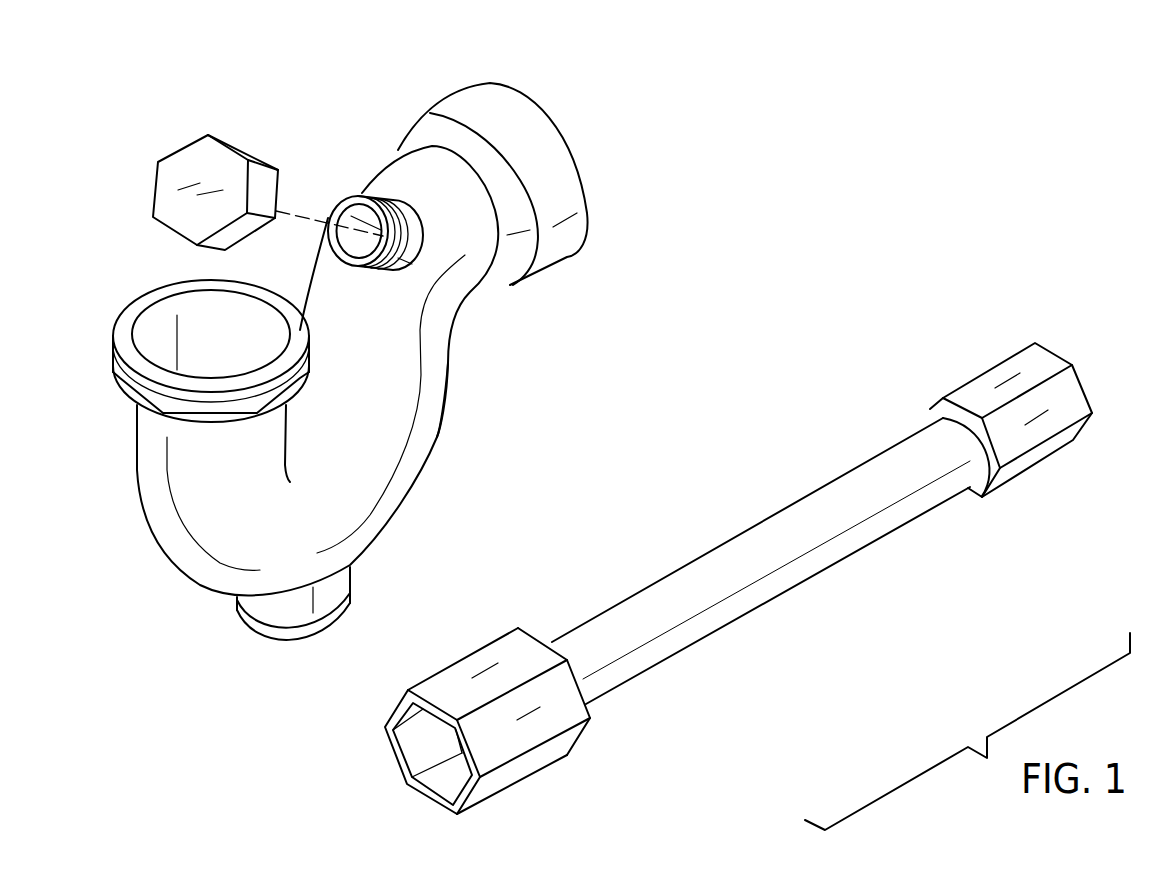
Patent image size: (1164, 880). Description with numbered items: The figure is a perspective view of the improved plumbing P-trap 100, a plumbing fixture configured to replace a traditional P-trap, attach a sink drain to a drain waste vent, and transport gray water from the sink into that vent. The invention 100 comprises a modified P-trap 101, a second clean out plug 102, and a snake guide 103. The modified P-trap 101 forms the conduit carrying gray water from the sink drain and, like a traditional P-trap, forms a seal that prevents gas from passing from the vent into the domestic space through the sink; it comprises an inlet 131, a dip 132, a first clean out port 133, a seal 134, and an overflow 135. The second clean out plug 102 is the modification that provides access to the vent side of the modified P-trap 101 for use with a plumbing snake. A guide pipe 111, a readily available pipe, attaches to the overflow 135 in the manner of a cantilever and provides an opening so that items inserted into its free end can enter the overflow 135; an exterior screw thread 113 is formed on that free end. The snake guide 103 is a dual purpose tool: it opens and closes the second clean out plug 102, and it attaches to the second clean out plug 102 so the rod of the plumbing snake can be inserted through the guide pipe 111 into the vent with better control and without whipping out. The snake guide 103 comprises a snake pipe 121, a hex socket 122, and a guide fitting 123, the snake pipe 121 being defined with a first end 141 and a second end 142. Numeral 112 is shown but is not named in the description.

The improved plumbing P-trap 100 is at (112, 108).
The modified P-trap 101 is at (443, 430).
The second clean out plug 102 is at (260, 157).
The snake guide 103 is at (787, 588).
The guide pipe 111 is at (400, 268).
The cap nut 112 is at (202, 163).
The exterior screw thread 113 is at (367, 266).
The snake pipe 121 is at (710, 573).
The hex socket 122 is at (475, 667).
The guide fitting 123 is at (998, 363).
The inlet 131 is at (195, 345).
The dip 132 is at (203, 570).
The first clean out port 133 is at (297, 637).
The seal 134 is at (433, 410).
The overflow 135 is at (430, 178).
The first end 141 is at (590, 707).
The second end 142 is at (947, 418).